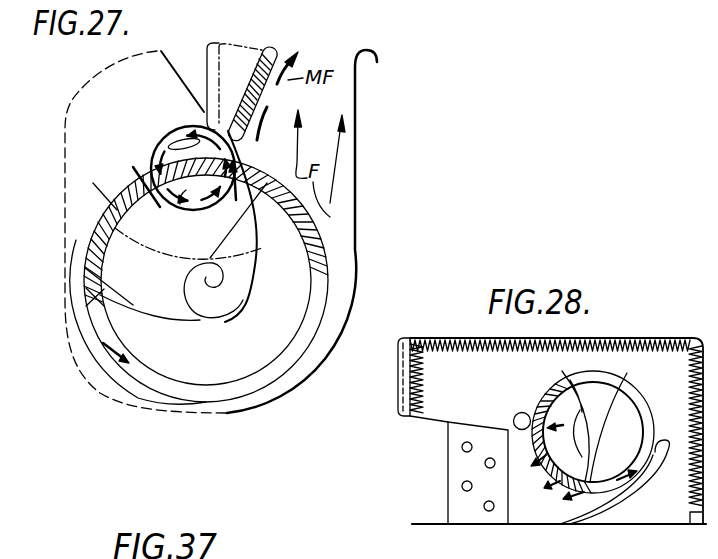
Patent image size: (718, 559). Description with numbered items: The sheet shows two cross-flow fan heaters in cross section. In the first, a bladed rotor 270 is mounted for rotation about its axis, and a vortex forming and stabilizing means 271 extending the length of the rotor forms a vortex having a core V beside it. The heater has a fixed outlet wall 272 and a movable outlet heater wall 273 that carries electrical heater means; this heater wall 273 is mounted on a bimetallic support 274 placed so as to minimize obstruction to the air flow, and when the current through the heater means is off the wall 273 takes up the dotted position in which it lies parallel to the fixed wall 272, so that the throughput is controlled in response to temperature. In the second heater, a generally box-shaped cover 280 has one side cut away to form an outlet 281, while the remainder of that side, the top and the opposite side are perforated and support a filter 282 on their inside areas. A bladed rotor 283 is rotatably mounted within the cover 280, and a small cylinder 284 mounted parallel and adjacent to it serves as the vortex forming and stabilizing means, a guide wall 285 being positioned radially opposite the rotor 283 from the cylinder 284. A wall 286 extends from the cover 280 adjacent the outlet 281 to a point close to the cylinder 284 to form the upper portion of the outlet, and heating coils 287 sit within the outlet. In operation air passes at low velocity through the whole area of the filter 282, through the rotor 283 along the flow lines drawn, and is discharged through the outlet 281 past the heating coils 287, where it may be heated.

In FIG. 27, the bladed rotor 270 is at (103, 352).
In FIG. 27, the vortex forming and stabilizing means 271 is at (189, 122).
In FIG. 27, the fixed outlet wall 272 is at (358, 197).
In FIG. 27, the movable outlet heater wall 273 is at (275, 53).
In FIG. 27, the bimetallic support 274 is at (243, 323).
In FIG. 28, the box-shaped cover 280 is at (607, 337).
In FIG. 28, the outlet 281 is at (458, 457).
In FIG. 28, the filter 282 is at (683, 396).
In FIG. 28, the bladed rotor 283 is at (546, 384).
In FIG. 28, the small cylinder 284 is at (513, 419).
In FIG. 28, the guide wall 285 is at (617, 504).
In FIG. 28, the wall 286 is at (423, 418).
In FIG. 28, the heating coils 287 is at (484, 506).